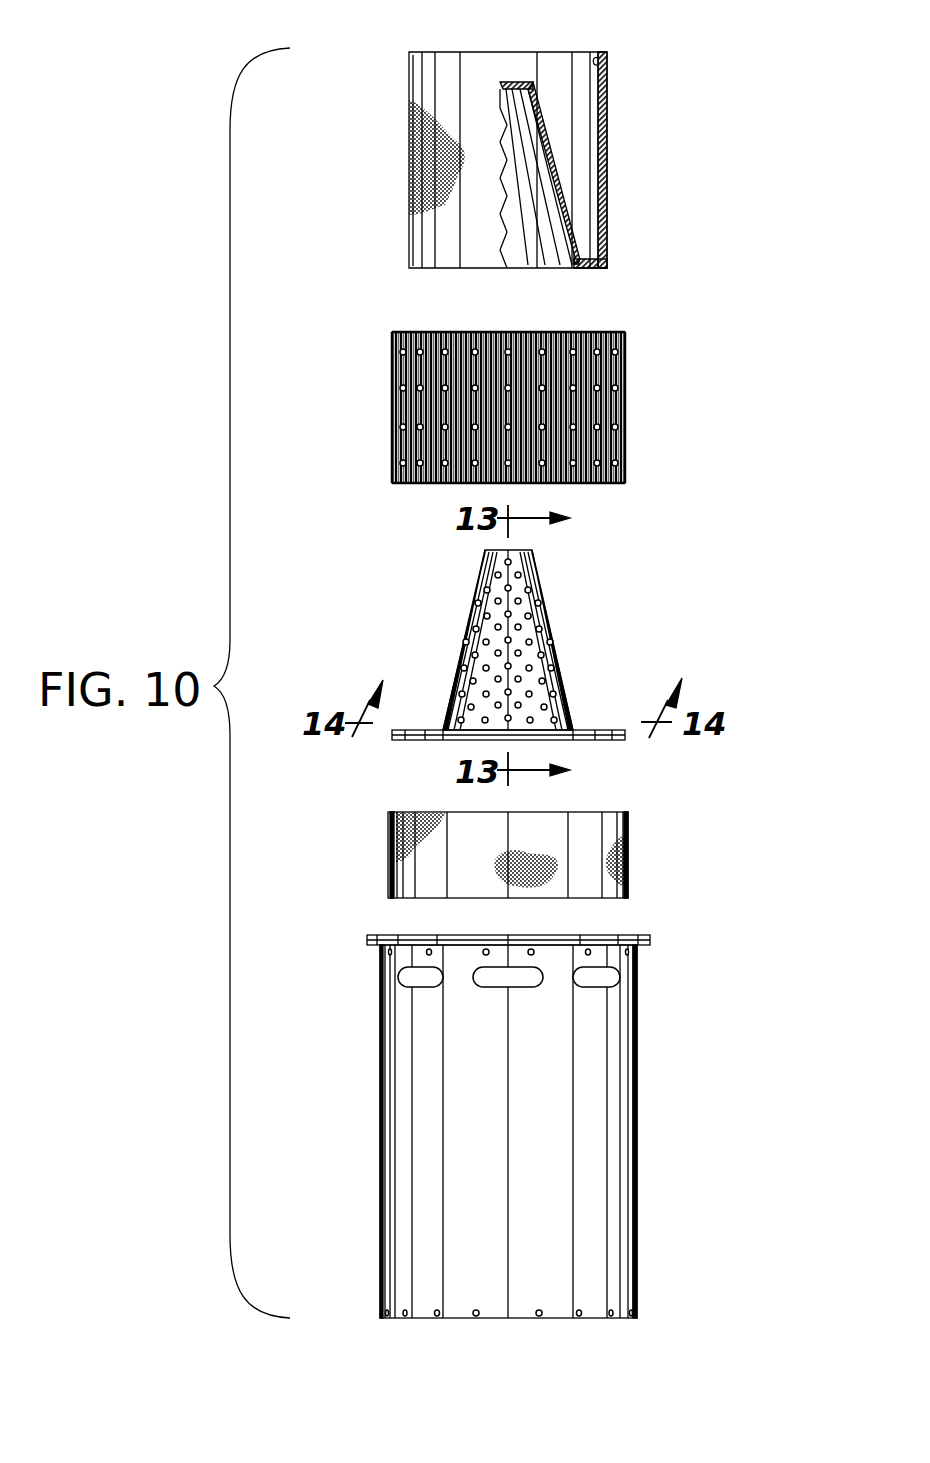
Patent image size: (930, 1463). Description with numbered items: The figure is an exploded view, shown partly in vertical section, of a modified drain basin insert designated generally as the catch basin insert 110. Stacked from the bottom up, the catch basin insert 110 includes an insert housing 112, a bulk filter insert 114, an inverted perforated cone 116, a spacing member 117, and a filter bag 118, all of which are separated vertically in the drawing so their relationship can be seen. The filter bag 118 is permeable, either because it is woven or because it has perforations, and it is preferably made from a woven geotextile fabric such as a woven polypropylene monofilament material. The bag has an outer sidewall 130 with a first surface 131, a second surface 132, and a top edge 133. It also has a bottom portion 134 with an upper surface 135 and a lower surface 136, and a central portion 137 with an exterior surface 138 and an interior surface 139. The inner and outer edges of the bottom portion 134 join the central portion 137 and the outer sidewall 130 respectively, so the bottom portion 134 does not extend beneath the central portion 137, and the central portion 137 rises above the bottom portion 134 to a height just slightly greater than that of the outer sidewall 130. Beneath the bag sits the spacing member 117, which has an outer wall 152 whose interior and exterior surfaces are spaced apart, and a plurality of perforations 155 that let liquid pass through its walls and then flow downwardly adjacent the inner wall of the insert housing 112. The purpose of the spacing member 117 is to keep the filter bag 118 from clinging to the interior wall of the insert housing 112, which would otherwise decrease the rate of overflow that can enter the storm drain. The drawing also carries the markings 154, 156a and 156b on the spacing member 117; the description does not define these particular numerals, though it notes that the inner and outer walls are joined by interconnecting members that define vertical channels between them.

The catch basin insert 110 is at (715, 310).
The insert housing 112 is at (685, 1093).
The bulk filter insert 114 is at (675, 843).
The inverted perforated cone 116 is at (612, 596).
The spacing member 117 is at (542, 399).
The filter bag 118 is at (553, 160).
The outer sidewall 130 is at (622, 170).
The first surface 131 is at (610, 80).
The second surface 132 is at (597, 60).
The top edge 133 is at (605, 52).
The bottom portion 134 is at (609, 275).
The upper surface 135 is at (606, 244).
The lower surface 136 is at (586, 270).
The central portion 137 is at (512, 70).
The exterior surface 138 is at (551, 133).
The interior surface 139 is at (548, 148).
The outer wall 152 is at (395, 408).
The cylinder edge 154 is at (627, 472).
The perforations 155 is at (576, 386).
The first end 156a is at (396, 333).
The second end 156b is at (397, 483).